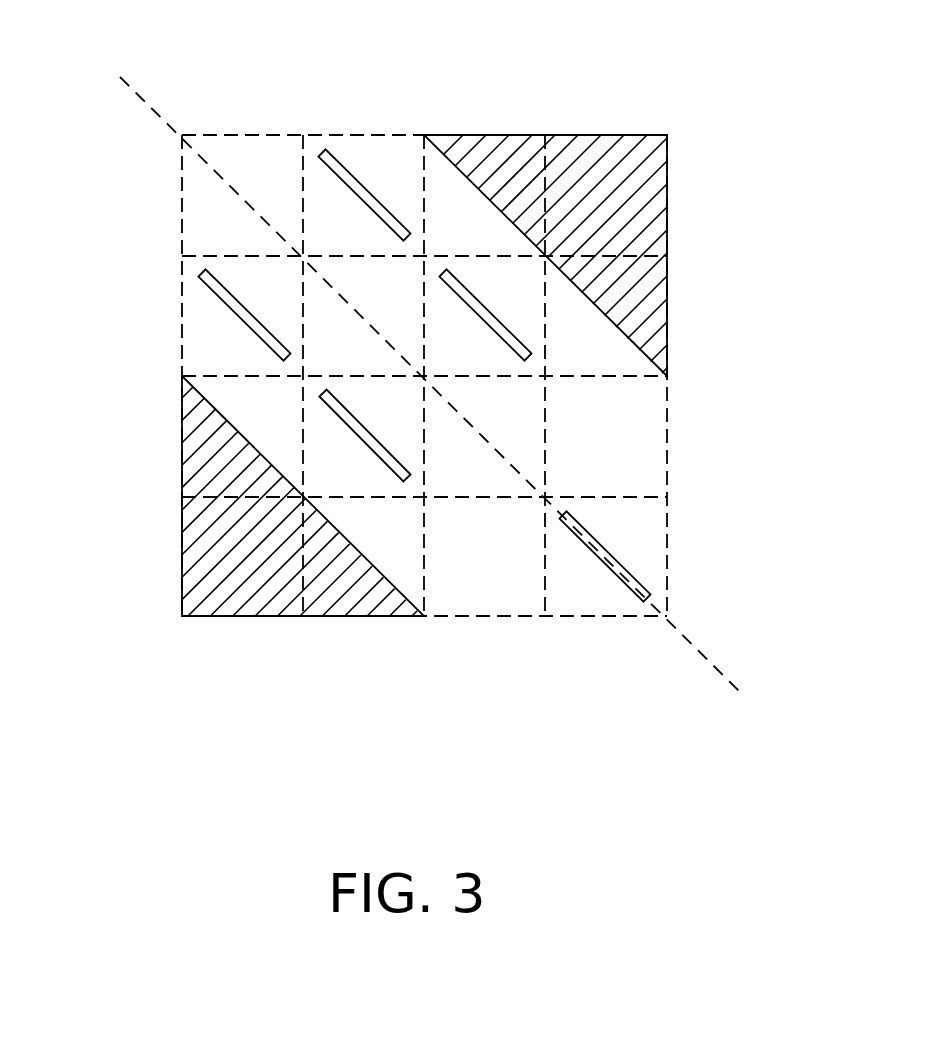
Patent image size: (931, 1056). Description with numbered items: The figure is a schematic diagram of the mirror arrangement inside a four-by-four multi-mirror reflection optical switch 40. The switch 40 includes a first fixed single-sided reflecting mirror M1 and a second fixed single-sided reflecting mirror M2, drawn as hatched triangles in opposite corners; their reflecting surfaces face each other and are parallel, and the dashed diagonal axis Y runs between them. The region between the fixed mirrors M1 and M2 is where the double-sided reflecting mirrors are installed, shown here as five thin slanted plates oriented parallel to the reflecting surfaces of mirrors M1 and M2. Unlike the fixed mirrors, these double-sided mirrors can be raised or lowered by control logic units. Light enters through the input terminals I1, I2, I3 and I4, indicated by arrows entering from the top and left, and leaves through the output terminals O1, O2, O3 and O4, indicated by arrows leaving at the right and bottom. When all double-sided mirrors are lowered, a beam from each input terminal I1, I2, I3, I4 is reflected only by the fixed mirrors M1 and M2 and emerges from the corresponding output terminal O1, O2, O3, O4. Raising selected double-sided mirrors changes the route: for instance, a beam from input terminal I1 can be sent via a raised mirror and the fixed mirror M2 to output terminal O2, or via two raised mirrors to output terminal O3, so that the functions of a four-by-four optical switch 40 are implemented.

The multi-mirror reflection optical switch 40 is at (718, 148).
The first fixed single-sided reflecting mirror M1 is at (193, 550).
The second fixed single-sided reflecting mirror M2 is at (655, 212).
The diagonal axis Y is at (92, 61).
The first input terminal I1 is at (241, 102).
The second input terminal I2 is at (122, 335).
The third input terminal I3 is at (122, 229).
The fourth input terminal I4 is at (365, 102).
The first output terminal O1 is at (696, 458).
The second output terminal O2 is at (611, 640).
The third output terminal O3 is at (490, 640).
The fourth output terminal O4 is at (696, 588).